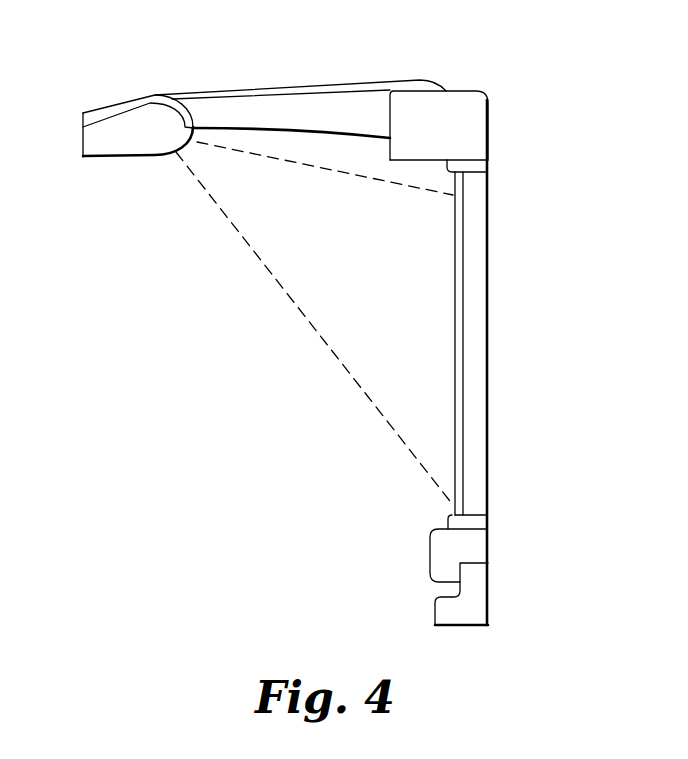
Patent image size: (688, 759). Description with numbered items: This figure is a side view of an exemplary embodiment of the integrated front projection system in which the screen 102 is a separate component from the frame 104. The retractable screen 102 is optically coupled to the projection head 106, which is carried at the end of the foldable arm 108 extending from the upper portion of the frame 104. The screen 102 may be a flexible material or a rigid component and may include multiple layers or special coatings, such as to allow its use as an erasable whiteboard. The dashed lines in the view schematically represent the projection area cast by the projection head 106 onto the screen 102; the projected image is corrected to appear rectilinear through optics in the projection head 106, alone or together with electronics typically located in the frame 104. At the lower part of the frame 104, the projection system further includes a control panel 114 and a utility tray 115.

The retractable screen 102 is at (453, 281).
The frame 104 is at (482, 312).
The projection head 106 is at (132, 145).
The foldable arm 108 is at (297, 107).
The control panel 114 is at (442, 553).
The utility tray 115 is at (442, 610).